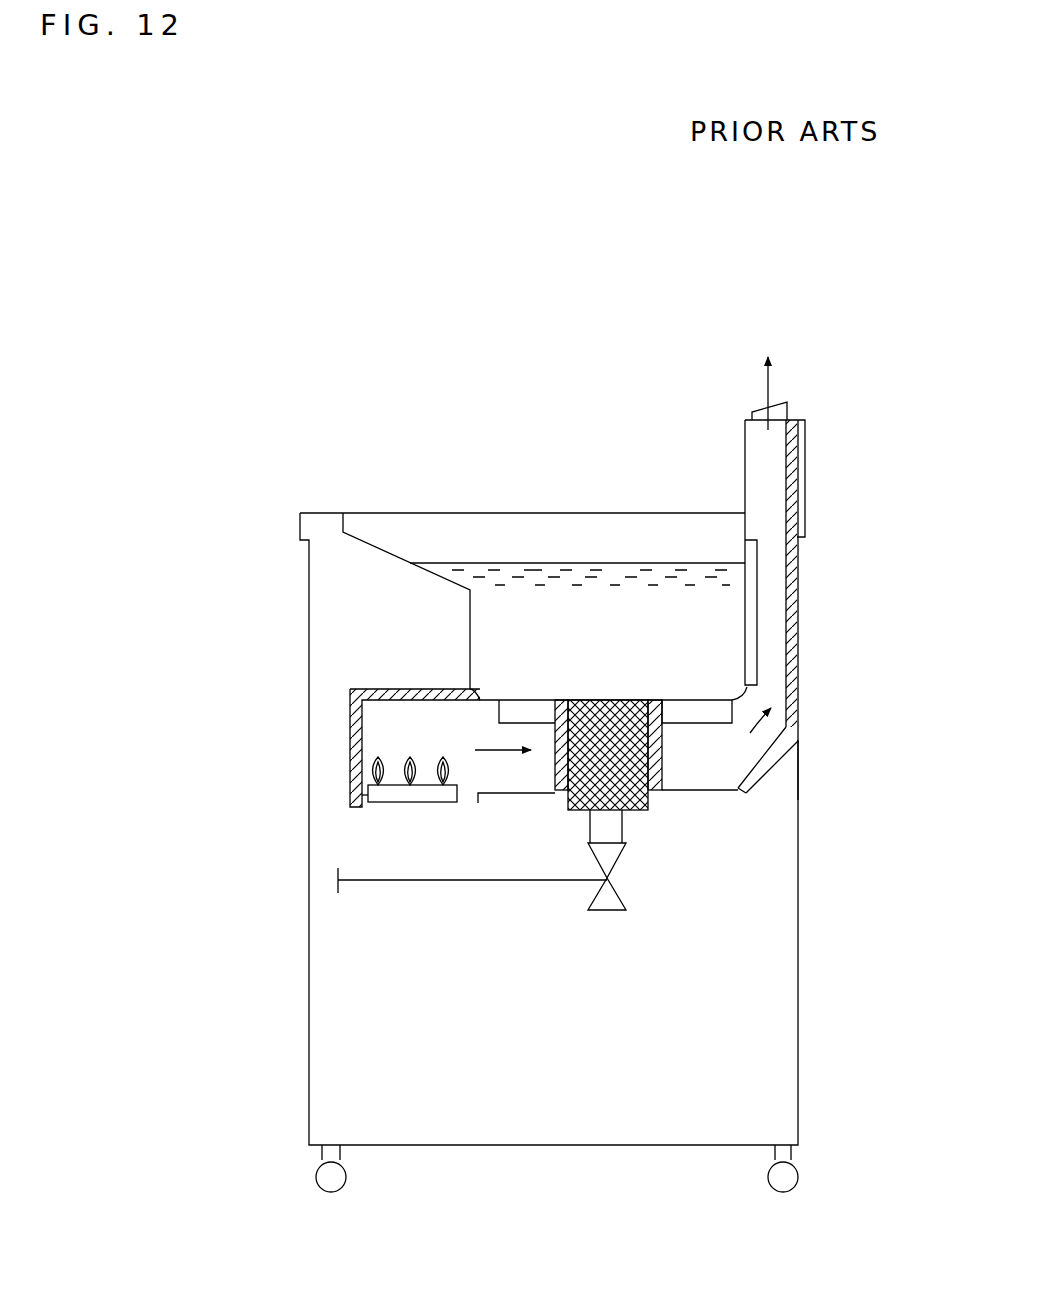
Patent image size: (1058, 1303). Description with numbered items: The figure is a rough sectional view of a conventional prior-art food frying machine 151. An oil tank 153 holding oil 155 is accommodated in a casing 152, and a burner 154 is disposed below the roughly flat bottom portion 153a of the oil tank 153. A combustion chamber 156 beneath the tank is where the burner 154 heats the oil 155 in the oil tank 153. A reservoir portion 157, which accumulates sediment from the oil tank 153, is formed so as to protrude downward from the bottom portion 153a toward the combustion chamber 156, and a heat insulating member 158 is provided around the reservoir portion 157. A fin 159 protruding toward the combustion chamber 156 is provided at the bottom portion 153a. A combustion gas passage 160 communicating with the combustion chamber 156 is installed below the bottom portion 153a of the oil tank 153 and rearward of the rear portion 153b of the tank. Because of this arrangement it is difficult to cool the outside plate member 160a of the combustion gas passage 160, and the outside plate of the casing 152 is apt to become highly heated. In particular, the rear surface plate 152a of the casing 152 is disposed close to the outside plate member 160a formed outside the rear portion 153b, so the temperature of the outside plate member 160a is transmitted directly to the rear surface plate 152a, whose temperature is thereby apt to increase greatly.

The food frying machine 151 is at (309, 460).
The casing 152 is at (801, 968).
The rear surface plate 152a is at (798, 768).
The oil tank 153 is at (395, 552).
The bottom portion 153a is at (690, 696).
The rear portion 153b is at (748, 564).
The burner 154 is at (437, 805).
The oil 155 is at (600, 562).
The combustion chamber 156 is at (446, 718).
The reservoir portion 157 is at (640, 810).
The heat insulating member 158 is at (555, 766).
The fin 159 is at (702, 753).
The combustion gas passage 160 is at (741, 762).
The outside plate member 160a is at (785, 606).